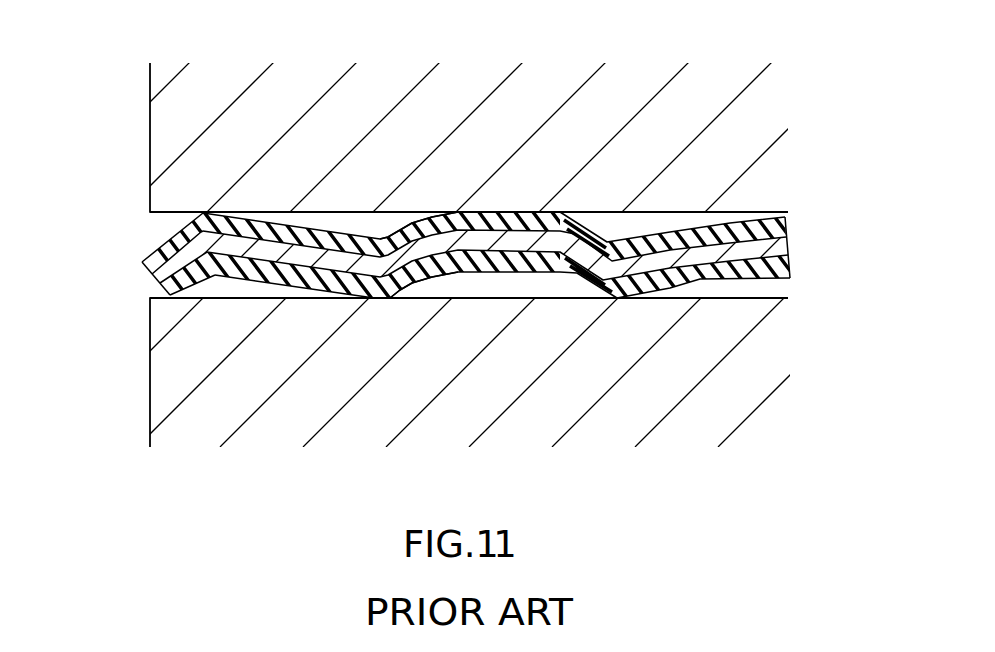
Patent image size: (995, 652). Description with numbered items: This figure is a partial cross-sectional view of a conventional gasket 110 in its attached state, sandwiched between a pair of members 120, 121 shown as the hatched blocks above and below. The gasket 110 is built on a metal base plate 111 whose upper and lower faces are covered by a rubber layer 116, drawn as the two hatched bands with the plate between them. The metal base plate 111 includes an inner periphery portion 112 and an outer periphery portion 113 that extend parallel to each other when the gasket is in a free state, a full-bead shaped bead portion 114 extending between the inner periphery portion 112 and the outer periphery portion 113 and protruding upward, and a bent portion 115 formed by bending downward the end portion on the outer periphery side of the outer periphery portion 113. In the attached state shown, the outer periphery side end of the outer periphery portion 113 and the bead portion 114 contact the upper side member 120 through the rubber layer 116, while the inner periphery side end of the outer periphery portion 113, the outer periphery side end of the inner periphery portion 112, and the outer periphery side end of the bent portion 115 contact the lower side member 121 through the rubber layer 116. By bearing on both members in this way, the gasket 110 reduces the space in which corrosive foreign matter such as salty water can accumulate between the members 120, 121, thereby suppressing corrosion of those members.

The gasket 110 is at (497, 243).
The metal base plate 111 is at (156, 282).
The inner periphery portion 112 is at (437, 255).
The outer periphery portion 113 is at (275, 245).
The bead portion 114 is at (495, 231).
The bent portion 115 is at (180, 267).
The rubber layer 116 is at (353, 240).
The upper side member 120 is at (182, 138).
The lower side member 121 is at (178, 397).